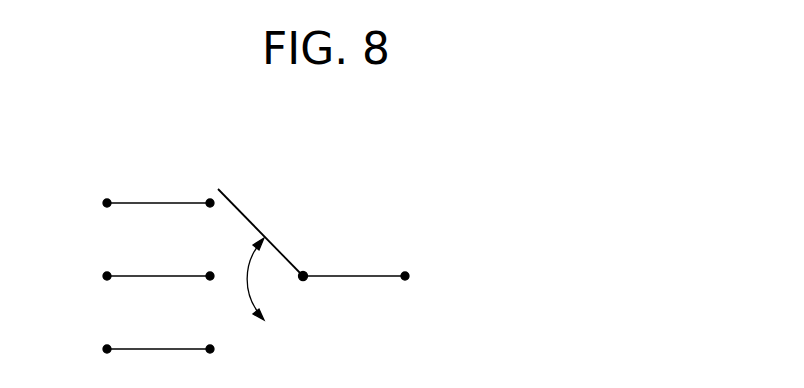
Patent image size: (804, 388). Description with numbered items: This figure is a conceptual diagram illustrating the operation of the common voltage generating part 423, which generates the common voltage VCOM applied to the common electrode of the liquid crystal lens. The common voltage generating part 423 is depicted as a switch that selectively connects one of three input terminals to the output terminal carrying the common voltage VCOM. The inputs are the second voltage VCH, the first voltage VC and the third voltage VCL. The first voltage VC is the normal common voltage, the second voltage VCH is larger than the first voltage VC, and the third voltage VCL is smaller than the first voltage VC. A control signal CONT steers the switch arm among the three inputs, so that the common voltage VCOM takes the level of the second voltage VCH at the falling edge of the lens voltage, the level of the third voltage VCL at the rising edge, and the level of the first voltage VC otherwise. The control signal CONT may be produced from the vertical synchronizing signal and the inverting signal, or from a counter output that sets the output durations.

The common voltage generating part 423 is at (410, 164).
The second voltage VCH is at (138, 202).
The first voltage VC is at (141, 277).
The third voltage VCL is at (138, 350).
The common voltage VCOM is at (385, 278).
The control signal CONT is at (265, 224).